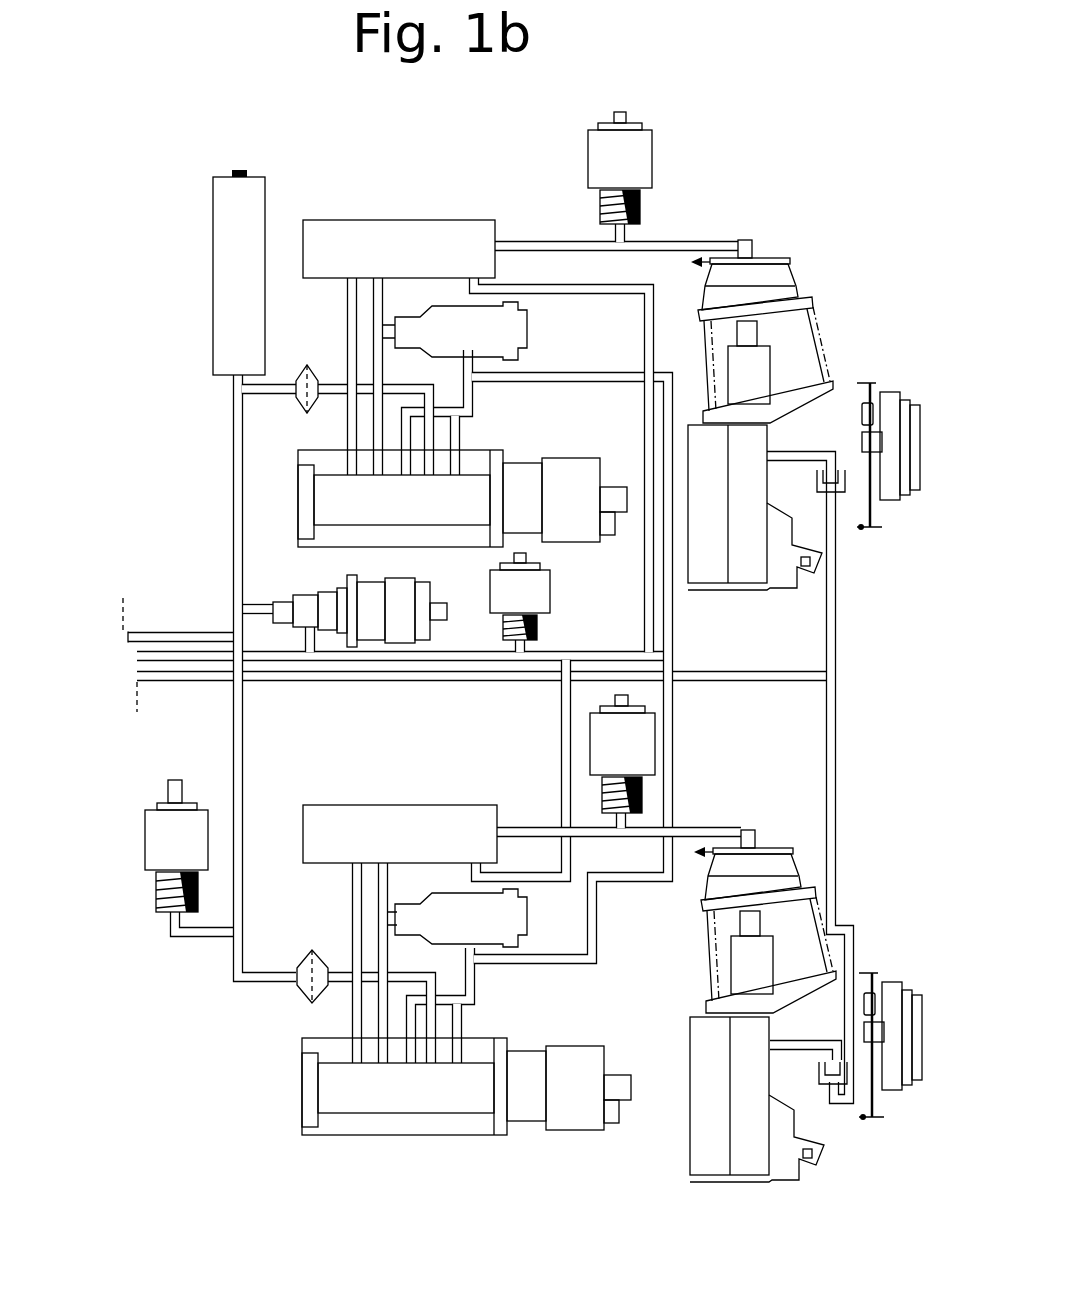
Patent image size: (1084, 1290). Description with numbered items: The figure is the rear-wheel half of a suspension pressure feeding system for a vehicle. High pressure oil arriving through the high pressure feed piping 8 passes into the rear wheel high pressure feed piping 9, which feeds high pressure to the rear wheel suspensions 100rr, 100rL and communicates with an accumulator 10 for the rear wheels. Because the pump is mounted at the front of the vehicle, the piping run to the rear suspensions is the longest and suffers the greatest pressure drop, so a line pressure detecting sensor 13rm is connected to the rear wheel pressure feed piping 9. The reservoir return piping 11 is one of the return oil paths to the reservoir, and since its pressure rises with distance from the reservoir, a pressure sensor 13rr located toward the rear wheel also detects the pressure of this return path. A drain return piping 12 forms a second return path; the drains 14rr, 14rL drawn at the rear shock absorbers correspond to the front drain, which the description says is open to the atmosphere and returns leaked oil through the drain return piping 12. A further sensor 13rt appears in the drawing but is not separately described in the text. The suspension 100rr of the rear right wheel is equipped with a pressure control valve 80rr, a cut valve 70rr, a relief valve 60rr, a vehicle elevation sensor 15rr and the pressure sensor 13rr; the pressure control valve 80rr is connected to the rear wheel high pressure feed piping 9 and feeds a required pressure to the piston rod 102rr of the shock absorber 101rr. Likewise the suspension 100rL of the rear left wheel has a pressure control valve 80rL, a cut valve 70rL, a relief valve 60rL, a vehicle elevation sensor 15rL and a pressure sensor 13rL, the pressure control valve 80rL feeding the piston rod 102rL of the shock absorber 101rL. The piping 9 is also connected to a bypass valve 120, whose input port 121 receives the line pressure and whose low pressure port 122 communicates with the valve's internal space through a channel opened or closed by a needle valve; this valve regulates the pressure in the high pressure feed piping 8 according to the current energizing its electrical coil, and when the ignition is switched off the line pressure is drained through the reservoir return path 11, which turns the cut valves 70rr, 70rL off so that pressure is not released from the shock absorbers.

The high pressure feed piping 8 is at (172, 632).
The rear wheel high pressure feed piping 9 is at (233, 558).
The accumulator for the rear wheels 10 is at (213, 212).
The reservoir return piping 11 is at (137, 656).
The drain return piping 12 is at (137, 678).
The bypass valve 120 is at (375, 628).
The input port 121 is at (265, 604).
The low pressure port 122 is at (309, 634).
The line pressure detecting sensor 13rm is at (147, 809).
The solenoid valve 13rt is at (550, 591).
The pressure sensor 13rr is at (652, 152).
The pressure sensor 13rL is at (590, 730).
The cut valve 70rr is at (473, 180).
The cut valve 70rL is at (425, 805).
The relief valve 60rr is at (590, 323).
The relief valve 60rL is at (585, 910).
The pressure control valve 80rr is at (530, 462).
The pressure control valve 80rL is at (600, 1010).
The suspension 100rr is at (801, 292).
The suspension 100rL is at (722, 862).
The shock absorber 101rr is at (772, 364).
The shock absorber 101rL is at (726, 953).
The piston rod 102rr is at (757, 240).
The piston rod 102rL is at (746, 829).
The caliper 14rr is at (817, 480).
The caliper 14rL is at (819, 1069).
The vehicle elevation sensor 15rr is at (935, 367).
The vehicle elevation sensor 15rL is at (928, 927).